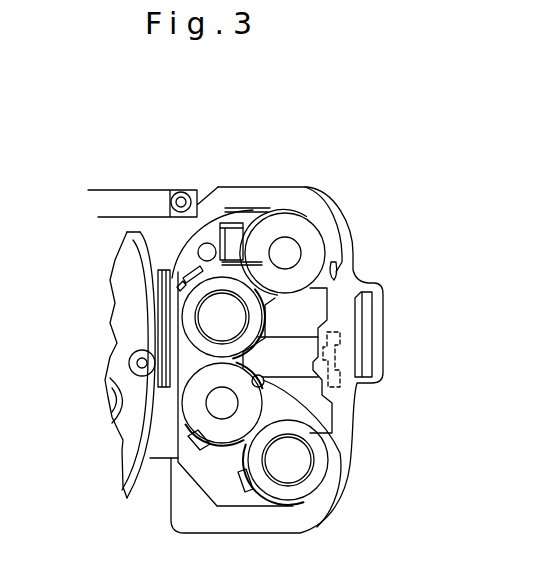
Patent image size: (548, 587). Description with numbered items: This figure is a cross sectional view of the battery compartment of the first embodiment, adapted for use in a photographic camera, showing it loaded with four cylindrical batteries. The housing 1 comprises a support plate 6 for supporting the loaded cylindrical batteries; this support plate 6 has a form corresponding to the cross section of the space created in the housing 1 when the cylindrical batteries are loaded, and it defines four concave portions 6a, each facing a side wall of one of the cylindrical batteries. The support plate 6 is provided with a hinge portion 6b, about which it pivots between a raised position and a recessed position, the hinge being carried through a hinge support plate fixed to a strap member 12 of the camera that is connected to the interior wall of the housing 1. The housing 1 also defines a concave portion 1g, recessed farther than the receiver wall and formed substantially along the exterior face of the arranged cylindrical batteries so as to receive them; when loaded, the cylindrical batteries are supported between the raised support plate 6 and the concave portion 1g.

The housing 1 is at (310, 282).
The concave portion 1g is at (250, 420).
The support plate 6 is at (310, 313).
The concave portions 6a is at (233, 292).
The hinge portion 6b is at (340, 377).
The strap member 12 is at (380, 339).